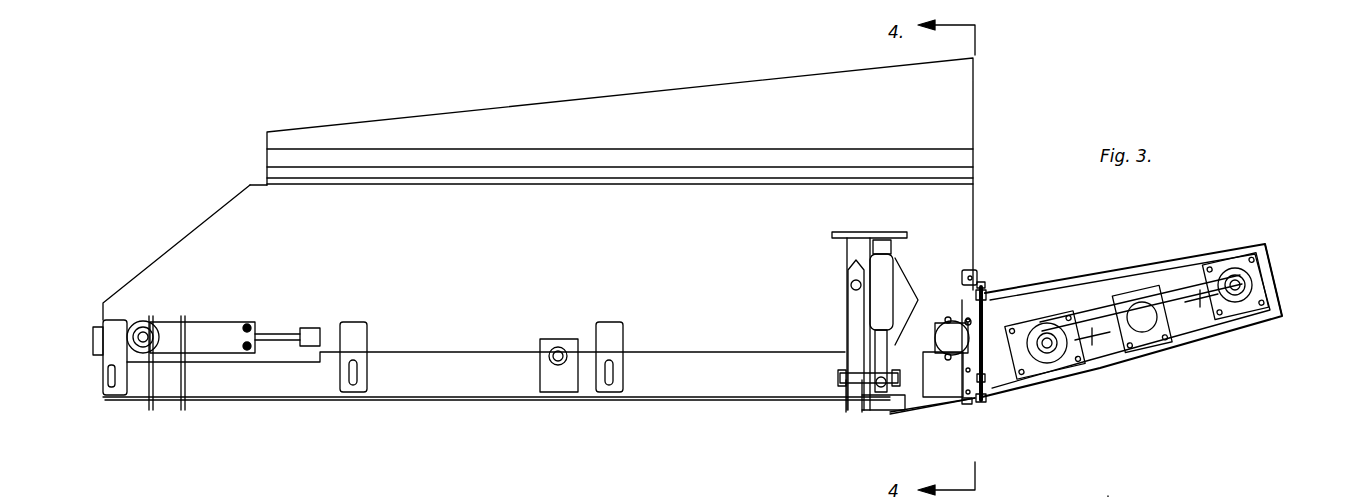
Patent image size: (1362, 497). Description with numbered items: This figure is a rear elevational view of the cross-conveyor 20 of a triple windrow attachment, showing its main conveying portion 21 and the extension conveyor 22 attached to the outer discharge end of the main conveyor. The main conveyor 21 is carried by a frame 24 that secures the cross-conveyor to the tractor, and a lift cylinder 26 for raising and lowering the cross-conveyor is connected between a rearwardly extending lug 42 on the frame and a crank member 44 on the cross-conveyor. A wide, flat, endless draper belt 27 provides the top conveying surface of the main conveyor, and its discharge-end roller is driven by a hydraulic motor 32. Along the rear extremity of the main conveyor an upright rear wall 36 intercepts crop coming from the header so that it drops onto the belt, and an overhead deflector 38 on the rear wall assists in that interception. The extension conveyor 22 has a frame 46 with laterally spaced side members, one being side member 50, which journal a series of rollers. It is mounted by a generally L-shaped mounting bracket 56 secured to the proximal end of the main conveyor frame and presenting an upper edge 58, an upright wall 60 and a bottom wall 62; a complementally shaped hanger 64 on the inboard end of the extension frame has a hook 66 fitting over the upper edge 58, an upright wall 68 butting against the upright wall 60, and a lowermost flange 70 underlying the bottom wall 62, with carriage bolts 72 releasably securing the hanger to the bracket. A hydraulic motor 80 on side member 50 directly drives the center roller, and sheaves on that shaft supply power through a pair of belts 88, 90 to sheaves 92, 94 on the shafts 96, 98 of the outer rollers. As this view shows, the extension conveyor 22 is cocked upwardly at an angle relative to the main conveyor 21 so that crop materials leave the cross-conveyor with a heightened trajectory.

The cross-conveyor 20 is at (238, 133).
The main conveying portion 21 is at (445, 410).
The extension conveyor portion 22 is at (1285, 247).
The frame 24 is at (850, 246).
The lift cylinder 26 is at (880, 298).
The draper belt 27 is at (1108, 487).
The hydraulic motor 32 is at (952, 334).
The rear wall 36 is at (180, 246).
The overhead deflector 38 is at (629, 105).
The lug 42 is at (897, 240).
The crank member 44 is at (868, 386).
The frame 46 is at (1298, 306).
The side member 50 is at (1200, 263).
The mounting bracket 56 is at (925, 420).
The upper edge 58 is at (970, 300).
The upright wall 60 is at (975, 360).
The bottom wall 62 is at (897, 415).
The hanger 64 is at (998, 360).
The hook 66 is at (982, 290).
The upright wall 68 is at (985, 326).
The lowermost flange 70 is at (977, 402).
The carriage bolts 72 is at (988, 290).
The hydraulic motor 80 is at (1143, 310).
The belt 88 is at (1104, 312).
The belt 90 is at (1200, 310).
The sheave 92 is at (1052, 356).
The sheave 94 is at (1248, 303).
The shaft 96 is at (1058, 346).
The shaft 98 is at (1237, 294).